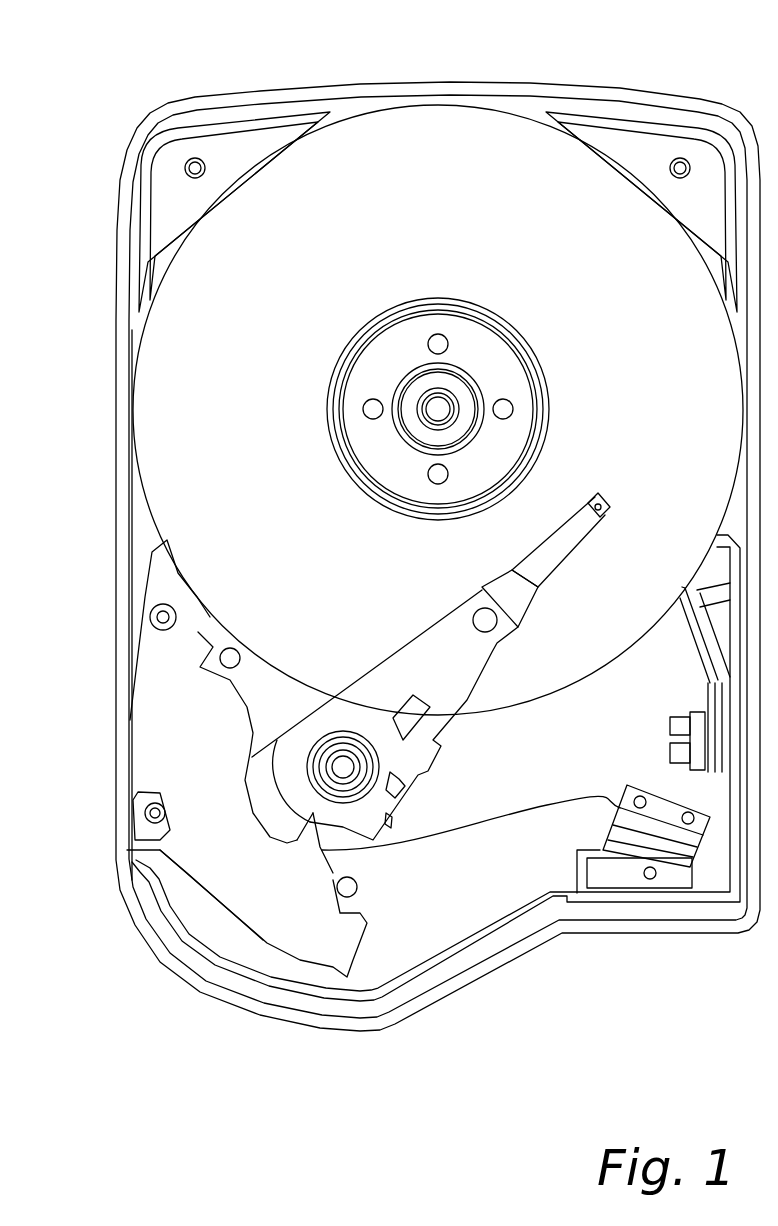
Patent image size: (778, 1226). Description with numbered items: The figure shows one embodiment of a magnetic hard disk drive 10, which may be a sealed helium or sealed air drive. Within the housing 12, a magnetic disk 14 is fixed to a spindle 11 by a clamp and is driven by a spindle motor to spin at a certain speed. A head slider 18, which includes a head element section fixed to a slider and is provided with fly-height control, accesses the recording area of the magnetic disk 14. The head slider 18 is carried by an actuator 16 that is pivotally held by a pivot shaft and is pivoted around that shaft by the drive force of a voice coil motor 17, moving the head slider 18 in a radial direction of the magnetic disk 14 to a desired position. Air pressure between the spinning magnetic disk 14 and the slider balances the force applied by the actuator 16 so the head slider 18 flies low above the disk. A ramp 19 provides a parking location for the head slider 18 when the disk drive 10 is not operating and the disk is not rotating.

The magnetic hard disk drive 10 is at (103, 45).
The spindle 11 is at (420, 388).
The housing 12 is at (663, 93).
The magnetic disk 14 is at (437, 127).
The actuator 16 is at (463, 768).
The voice coil motor 17 is at (195, 767).
The head slider 18 is at (607, 500).
The ramp 19 is at (706, 691).